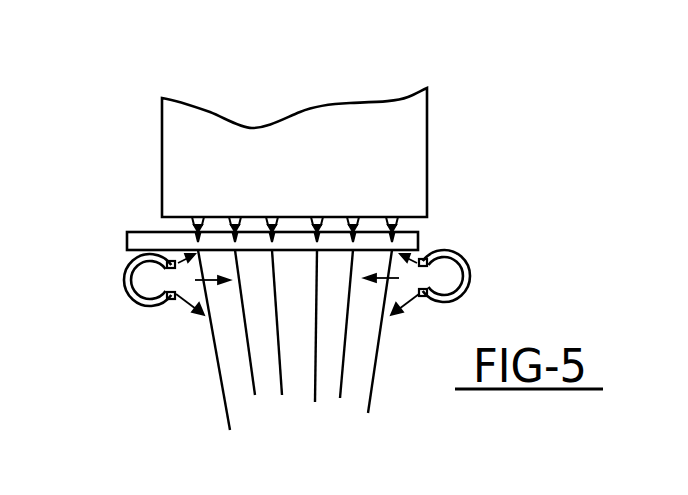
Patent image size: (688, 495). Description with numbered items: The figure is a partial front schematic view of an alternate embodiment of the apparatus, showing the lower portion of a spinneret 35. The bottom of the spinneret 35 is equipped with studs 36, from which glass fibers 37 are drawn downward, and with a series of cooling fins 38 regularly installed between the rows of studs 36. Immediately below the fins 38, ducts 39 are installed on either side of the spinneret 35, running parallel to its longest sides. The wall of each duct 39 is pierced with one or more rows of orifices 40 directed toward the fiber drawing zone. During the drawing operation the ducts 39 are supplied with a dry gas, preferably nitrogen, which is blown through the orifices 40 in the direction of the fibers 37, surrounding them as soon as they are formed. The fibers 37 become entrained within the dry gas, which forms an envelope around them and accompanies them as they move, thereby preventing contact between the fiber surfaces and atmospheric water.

The spinneret 35 is at (162, 161).
The studs 36 is at (356, 216).
The glass fibers 37 is at (278, 342).
The cooling fins 38 is at (139, 232).
The ducts 39 is at (128, 290).
The orifices 40 is at (172, 299).